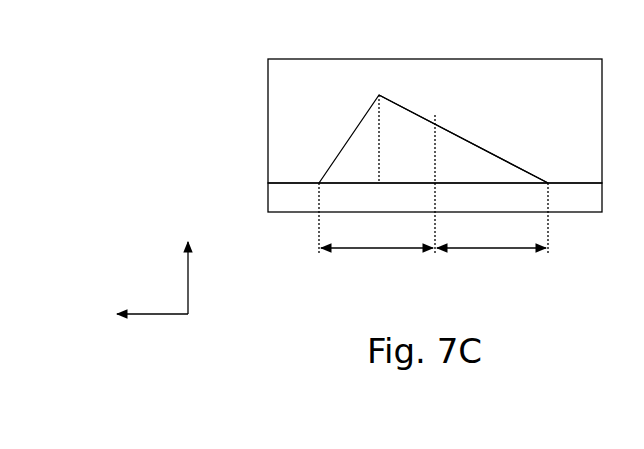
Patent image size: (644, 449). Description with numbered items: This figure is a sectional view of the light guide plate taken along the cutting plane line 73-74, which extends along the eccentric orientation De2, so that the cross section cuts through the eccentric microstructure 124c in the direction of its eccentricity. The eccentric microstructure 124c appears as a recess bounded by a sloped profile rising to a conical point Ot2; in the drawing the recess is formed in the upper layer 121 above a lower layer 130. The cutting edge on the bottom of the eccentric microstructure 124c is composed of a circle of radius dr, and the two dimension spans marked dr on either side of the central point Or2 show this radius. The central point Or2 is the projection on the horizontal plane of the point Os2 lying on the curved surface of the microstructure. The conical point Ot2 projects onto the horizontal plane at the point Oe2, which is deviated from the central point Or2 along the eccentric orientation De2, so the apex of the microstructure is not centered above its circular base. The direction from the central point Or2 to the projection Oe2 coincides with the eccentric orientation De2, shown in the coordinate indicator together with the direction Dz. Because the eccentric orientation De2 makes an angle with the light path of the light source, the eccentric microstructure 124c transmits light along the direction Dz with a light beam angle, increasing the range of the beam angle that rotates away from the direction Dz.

The eccentric microstructure 124c is at (307, 122).
The insulating layer 121 is at (280, 157).
The substrate layer 130 is at (283, 203).
The conical point Ot2 is at (379, 95).
The point of the curved surface Os2 is at (425, 120).
The projection of the conical point Oe2 is at (386, 183).
The central point Or2 is at (435, 182).
The radius dr is at (433, 264).
The cutting plane line 73-74 is at (631, 250).
The direction Dz is at (185, 263).
The eccentric orientation De2 is at (126, 315).